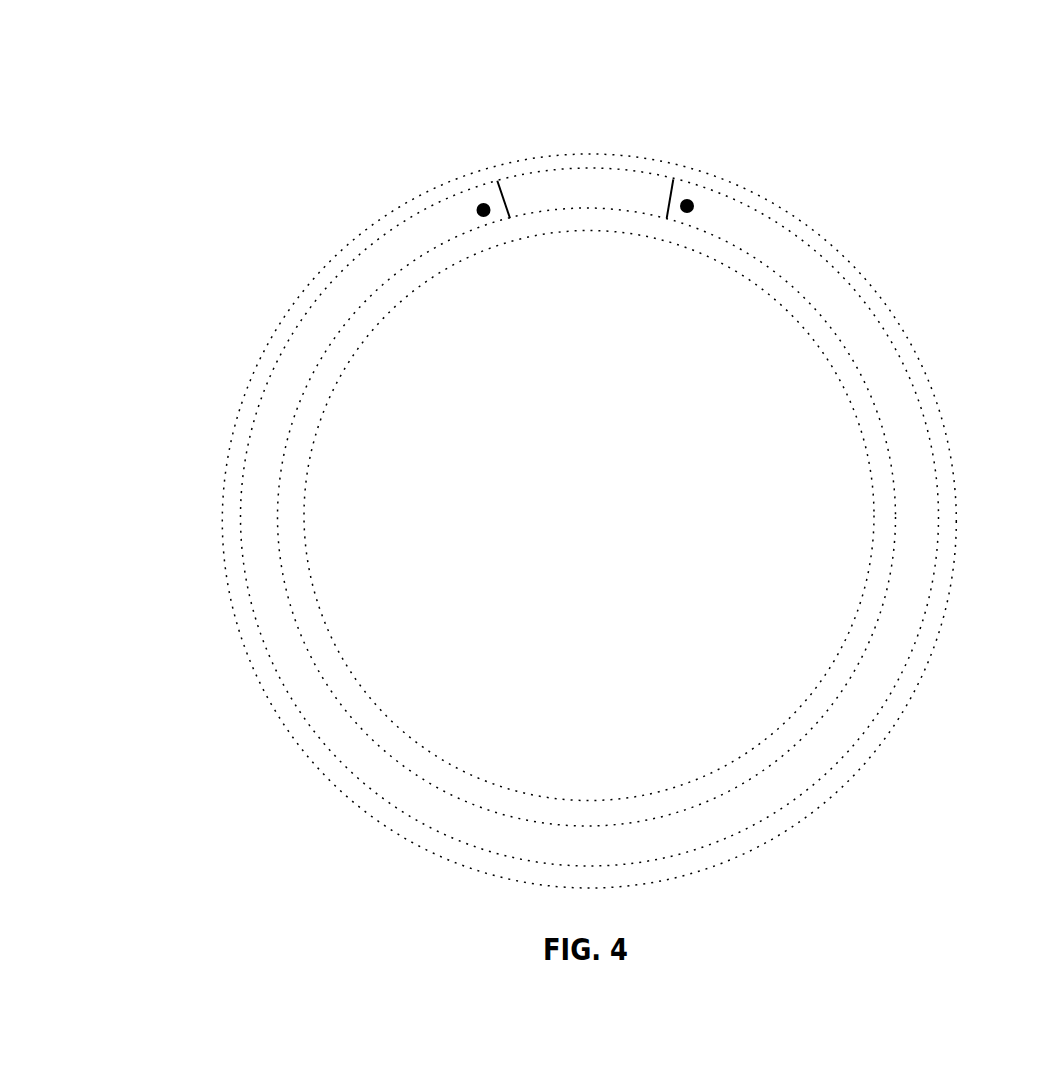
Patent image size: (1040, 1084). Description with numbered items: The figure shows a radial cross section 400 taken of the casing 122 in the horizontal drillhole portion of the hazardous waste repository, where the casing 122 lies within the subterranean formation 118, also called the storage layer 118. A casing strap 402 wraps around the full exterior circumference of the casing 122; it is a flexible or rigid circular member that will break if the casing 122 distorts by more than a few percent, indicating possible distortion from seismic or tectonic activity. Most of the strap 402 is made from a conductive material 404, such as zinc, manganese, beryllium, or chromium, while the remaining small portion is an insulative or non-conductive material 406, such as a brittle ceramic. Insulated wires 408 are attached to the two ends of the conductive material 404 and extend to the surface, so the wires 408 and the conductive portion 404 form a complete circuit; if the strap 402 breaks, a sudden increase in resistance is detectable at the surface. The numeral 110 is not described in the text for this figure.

The radial cross section 400 is at (942, 82).
The outer housing ring 110 is at (913, 345).
The conductive material 404 is at (290, 383).
The casing strap 402 is at (822, 292).
The casing 122 is at (872, 435).
The insulative or non-conductive material 406 is at (583, 188).
The insulated wires 408 is at (479, 207).
The subterranean formation 118 is at (183, 530).